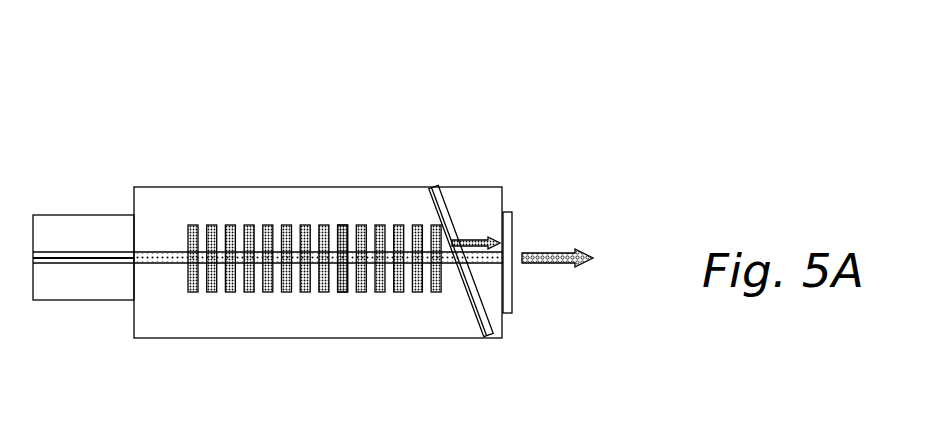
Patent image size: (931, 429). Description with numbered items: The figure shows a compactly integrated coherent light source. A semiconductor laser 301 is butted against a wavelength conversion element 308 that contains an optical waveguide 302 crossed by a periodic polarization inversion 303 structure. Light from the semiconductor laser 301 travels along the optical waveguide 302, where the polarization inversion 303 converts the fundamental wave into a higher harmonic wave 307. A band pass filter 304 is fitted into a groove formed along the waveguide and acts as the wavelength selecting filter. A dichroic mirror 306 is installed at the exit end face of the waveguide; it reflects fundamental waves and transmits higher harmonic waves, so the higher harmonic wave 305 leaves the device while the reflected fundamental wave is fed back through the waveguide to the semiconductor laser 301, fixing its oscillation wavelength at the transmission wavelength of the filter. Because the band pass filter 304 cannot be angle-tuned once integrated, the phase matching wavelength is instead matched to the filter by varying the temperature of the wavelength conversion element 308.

The semiconductor laser 301 is at (50, 225).
The optical waveguide 302 is at (282, 250).
The polarization inversion 303 is at (347, 228).
The band pass filter 304 is at (452, 218).
The higher harmonic wave 305 is at (557, 268).
The dichroic mirror 306 is at (515, 247).
The higher harmonic wave 307 is at (482, 240).
The wavelength conversion element 308 is at (299, 313).